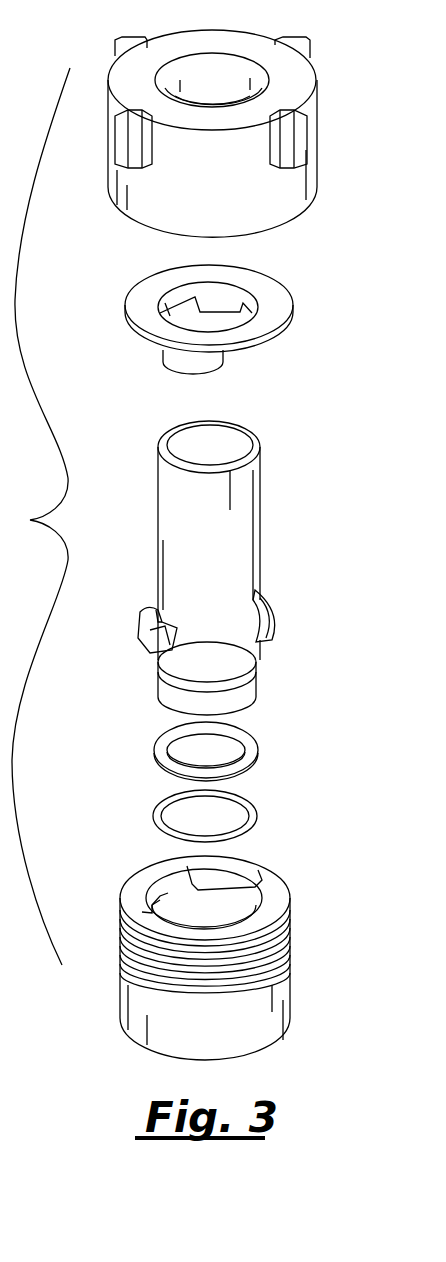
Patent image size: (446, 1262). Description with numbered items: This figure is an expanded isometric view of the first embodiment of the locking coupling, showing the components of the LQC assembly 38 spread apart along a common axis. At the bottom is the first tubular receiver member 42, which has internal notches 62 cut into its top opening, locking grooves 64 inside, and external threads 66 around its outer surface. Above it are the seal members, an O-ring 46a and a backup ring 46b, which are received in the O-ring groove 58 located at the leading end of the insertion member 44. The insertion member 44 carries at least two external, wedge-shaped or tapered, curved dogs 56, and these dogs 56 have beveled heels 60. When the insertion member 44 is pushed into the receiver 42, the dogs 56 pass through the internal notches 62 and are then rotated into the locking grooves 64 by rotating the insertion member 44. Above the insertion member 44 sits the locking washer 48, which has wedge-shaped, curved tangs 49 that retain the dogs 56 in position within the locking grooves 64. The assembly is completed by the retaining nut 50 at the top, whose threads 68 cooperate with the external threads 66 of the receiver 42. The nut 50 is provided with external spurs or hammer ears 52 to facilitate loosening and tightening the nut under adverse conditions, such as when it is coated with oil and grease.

The LQC assembly 38 is at (290, 601).
The tubular receiver member 42 is at (270, 1010).
The insertion member 44 is at (168, 538).
The O-ring 46a is at (256, 812).
The backup ring 46b is at (258, 747).
The locking washer 48 is at (283, 305).
The tangs 49 is at (220, 362).
The retaining nut 50 is at (293, 185).
The hammer ears 52 is at (120, 148).
The dogs 56 is at (150, 636).
The O-ring groove 58 is at (162, 683).
The beveled heels 60 is at (232, 648).
The internal notches 62 is at (150, 905).
The locking grooves 64 is at (155, 893).
The external threads 66 is at (285, 950).
The threads 68 is at (255, 97).